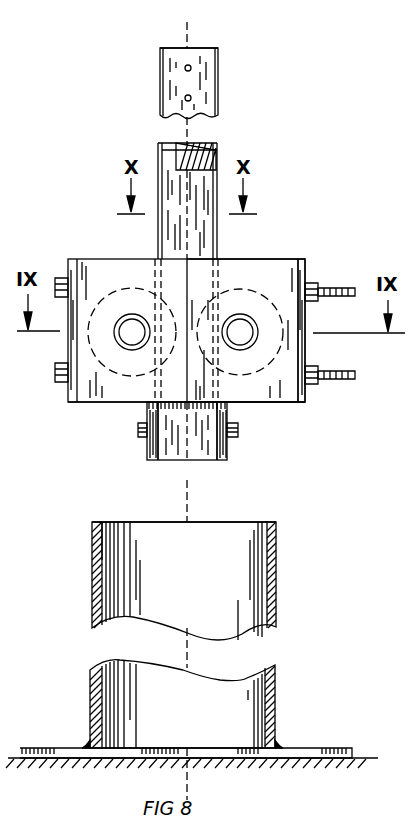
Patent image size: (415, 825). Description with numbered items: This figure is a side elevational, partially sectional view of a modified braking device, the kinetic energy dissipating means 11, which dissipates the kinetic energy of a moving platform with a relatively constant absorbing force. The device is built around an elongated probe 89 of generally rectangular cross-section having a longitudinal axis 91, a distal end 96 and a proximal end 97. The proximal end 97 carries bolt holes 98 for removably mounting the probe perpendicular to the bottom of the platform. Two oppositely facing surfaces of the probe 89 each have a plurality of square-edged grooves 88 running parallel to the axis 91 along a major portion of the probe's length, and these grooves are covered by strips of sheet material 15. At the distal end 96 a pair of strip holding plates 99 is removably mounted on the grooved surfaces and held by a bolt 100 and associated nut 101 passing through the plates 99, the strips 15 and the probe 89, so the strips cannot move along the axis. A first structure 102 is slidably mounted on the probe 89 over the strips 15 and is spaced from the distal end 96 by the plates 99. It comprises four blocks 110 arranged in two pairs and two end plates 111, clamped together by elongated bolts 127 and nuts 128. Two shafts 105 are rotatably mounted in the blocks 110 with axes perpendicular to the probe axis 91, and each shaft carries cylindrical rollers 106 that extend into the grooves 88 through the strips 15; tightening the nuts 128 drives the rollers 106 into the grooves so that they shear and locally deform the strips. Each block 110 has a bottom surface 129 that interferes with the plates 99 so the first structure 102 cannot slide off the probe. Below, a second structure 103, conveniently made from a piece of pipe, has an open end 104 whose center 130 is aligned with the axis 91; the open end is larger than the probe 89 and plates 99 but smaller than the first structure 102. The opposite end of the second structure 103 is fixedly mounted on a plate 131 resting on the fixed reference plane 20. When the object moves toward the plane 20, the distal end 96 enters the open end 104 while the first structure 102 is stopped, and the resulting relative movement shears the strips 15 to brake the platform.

The kinetic energy dissipating means 11 is at (315, 140).
The strips of sheet material 15 is at (160, 98).
The reference plane 20 is at (360, 758).
The square-edged grooves 88 is at (180, 152).
The probe 89 is at (155, 226).
The longitudinal axis 91 is at (192, 42).
The distal end 96 is at (200, 460).
The proximal end 97 is at (170, 48).
The bolt holes 98 is at (191, 69).
The strip holding plates 99 is at (147, 448).
The bolt 100 is at (138, 428).
The nut 101 is at (232, 440).
The first structure 102 is at (279, 258).
The second structure 103 is at (280, 553).
The open end 104 is at (255, 522).
The shafts 105 is at (116, 337).
The cylindrical rollers 106 is at (118, 290).
The blocks 110 is at (66, 262).
The end plates 111 is at (306, 320).
The elongated bolts 127 is at (342, 288).
The nuts 128 is at (312, 283).
The bottom surface 129 is at (90, 402).
The center 130 is at (185, 522).
The plate 131 is at (305, 748).